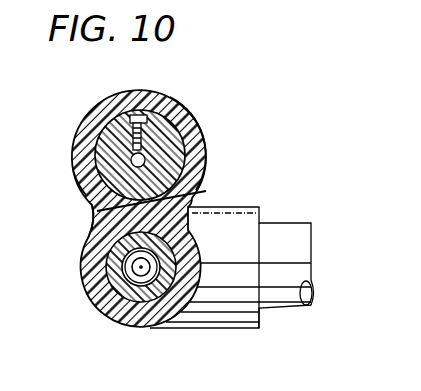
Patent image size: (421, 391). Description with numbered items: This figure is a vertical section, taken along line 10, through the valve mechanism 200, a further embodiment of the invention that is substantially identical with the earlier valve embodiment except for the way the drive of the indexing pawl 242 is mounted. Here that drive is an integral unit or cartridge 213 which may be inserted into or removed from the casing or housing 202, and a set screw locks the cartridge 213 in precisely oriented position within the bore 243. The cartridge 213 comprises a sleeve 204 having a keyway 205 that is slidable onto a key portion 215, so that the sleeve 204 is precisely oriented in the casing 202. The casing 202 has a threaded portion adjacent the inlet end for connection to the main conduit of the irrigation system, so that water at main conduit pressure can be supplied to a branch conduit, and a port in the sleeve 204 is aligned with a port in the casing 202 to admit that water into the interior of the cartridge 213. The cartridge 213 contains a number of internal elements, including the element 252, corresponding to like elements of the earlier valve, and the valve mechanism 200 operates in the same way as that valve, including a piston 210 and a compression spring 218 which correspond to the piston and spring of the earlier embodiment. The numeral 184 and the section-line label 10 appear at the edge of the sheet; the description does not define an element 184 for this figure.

The valve mechanism 200 is at (78, 290).
The casing 202 is at (72, 160).
The sleeve 204 is at (193, 126).
The keyway 205 is at (200, 193).
The piston 210 is at (142, 299).
The cartridge 213 is at (214, 153).
The key portion 215 is at (98, 218).
The compression spring 218 is at (128, 262).
The indexing pawl 242 is at (88, 193).
The bore 243 is at (106, 129).
The cartridge element 252 is at (141, 113).
The element of adjacent figure 184 is at (383, 0).
The element of adjacent figure 10 is at (410, 32).